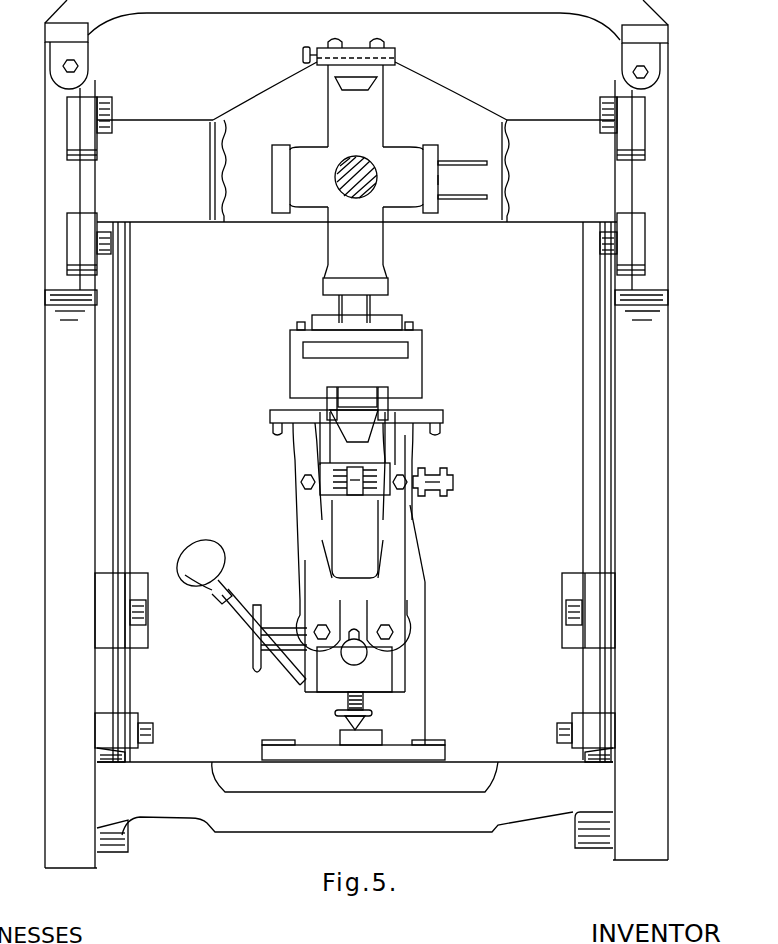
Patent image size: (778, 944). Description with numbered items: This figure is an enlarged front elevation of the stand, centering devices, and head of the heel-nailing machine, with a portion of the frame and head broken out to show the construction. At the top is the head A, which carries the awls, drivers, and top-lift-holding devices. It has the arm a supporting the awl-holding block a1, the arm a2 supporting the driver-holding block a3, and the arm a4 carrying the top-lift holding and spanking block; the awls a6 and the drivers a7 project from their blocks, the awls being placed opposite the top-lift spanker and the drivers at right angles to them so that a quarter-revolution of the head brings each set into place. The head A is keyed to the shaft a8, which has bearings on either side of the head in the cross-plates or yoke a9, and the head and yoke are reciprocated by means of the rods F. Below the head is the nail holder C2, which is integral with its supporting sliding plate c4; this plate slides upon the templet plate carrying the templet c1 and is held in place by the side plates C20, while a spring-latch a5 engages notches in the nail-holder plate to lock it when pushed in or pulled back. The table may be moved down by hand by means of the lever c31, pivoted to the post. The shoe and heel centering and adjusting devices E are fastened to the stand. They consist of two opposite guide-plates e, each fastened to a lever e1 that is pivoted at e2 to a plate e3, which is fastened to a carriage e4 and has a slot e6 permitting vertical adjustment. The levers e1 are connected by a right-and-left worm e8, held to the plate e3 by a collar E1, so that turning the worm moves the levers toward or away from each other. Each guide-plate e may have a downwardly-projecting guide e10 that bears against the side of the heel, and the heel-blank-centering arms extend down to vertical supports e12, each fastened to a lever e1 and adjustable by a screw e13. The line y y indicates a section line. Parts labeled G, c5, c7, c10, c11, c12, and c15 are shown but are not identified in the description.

The clamp plate G is at (348, 60).
The head A is at (300, 179).
The arm a is at (355, 171).
The awl-holding block a1 is at (389, 287).
The arm a2 is at (410, 179).
The driver-holding block a3 is at (440, 180).
The arm a4 is at (360, 92).
The spring-latch a5 is at (338, 303).
The awls a6 is at (372, 305).
The drivers a7 is at (470, 161).
The shaft a8 is at (358, 160).
The cross-plates or yoke a9 is at (357, 142).
The nail holder C2 is at (405, 326).
The side plates C20 is at (300, 340).
The guide strips c11 is at (435, 622).
The center block c15 is at (357, 389).
The wedge c10 is at (325, 422).
The guide walls c12 is at (322, 455).
The vertical posts or supports e12 is at (388, 455).
The right-and-left screw or worm e8 is at (353, 496).
The guide-plates e is at (356, 409).
The screw e13 is at (272, 432).
The section line y y is at (300, 482).
The lever e1 is at (300, 514).
The carriage e4 is at (415, 522).
The shoe and heel centering and adjusting devices E is at (353, 617).
The collar E1 is at (355, 539).
The plate e3 is at (352, 565).
The pivot e2 is at (322, 624).
The slot e6 is at (355, 628).
The pivot boss c5 is at (354, 652).
The supporting sliding plate c4 is at (303, 688).
The adjusting screw c7 is at (346, 703).
The templet c1 is at (220, 790).
The lever c31 is at (250, 600).
The downwardly-projecting guide e10 is at (283, 634).
The rods F is at (362, 492).